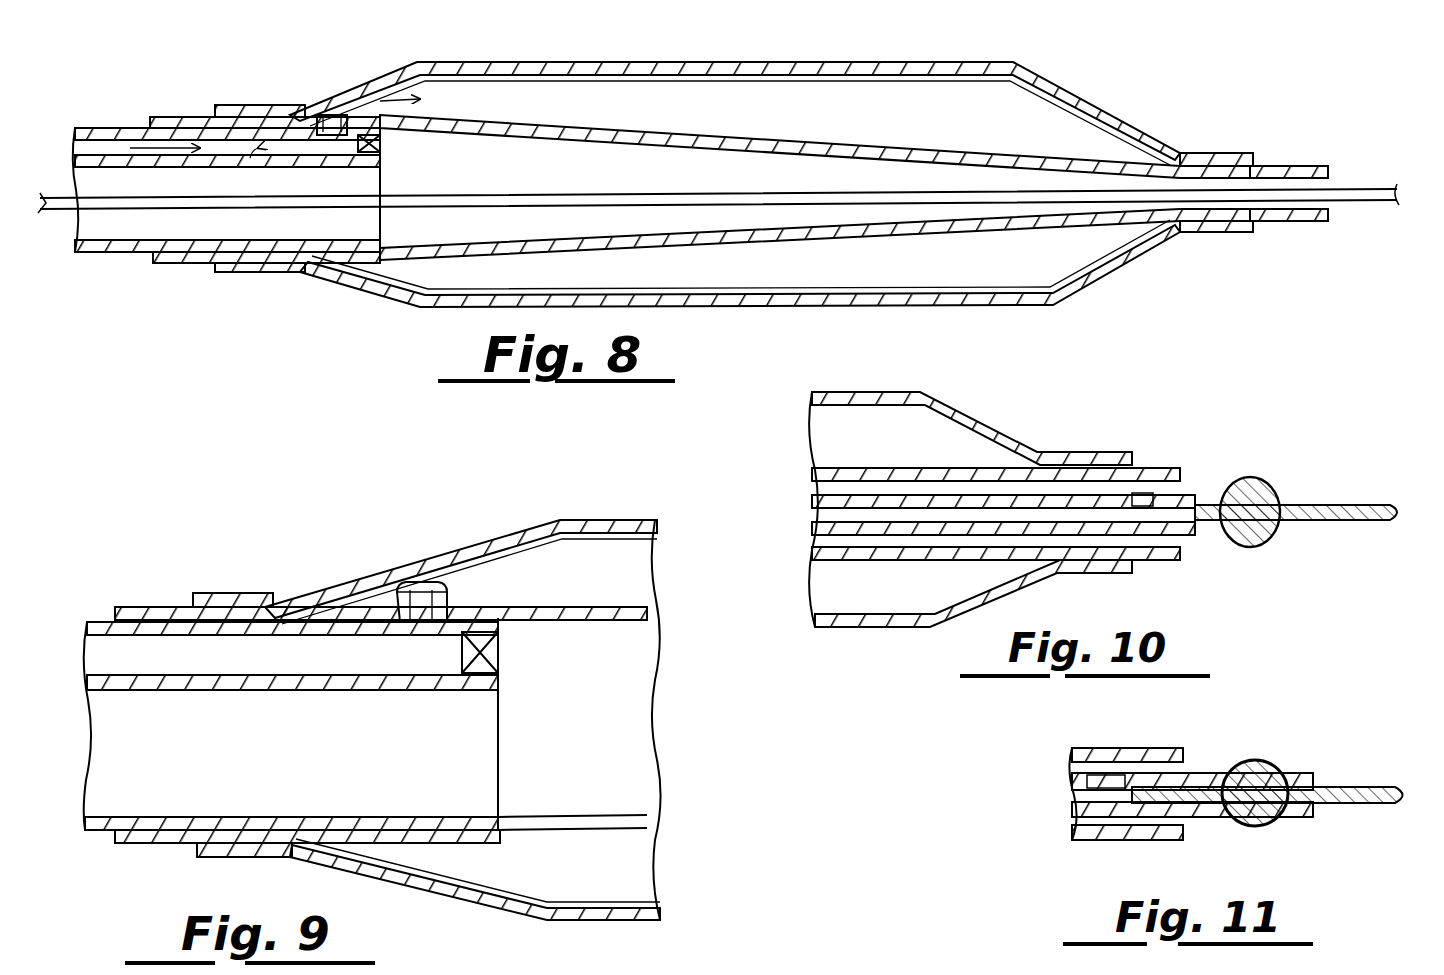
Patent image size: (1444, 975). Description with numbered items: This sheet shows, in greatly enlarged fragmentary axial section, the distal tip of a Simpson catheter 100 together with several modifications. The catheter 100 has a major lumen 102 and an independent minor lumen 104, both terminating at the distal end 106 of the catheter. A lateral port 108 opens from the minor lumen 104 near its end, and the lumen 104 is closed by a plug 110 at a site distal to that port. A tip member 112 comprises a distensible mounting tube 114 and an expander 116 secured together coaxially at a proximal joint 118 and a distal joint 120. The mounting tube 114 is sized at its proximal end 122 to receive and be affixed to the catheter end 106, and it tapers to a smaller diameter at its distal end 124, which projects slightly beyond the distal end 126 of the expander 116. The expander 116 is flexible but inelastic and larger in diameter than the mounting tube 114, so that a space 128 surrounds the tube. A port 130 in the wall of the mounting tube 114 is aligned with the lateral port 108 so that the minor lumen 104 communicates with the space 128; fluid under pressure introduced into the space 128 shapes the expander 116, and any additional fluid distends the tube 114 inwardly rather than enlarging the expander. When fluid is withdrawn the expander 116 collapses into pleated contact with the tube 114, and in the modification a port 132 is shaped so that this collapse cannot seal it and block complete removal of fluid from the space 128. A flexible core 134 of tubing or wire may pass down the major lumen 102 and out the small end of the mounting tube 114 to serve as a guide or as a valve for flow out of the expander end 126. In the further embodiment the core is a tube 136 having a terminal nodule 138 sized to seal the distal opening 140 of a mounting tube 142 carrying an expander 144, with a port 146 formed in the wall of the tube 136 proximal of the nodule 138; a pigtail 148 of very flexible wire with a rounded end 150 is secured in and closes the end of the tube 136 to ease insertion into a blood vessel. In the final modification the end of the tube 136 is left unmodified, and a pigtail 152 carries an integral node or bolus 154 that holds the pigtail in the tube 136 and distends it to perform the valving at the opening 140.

In FIG. 8, the Simpson catheter 100 is at (718, 201).
In FIG. 9, the Simpson catheter 100 is at (366, 703).
In FIG. 8, the major lumen 102 is at (222, 234).
In FIG. 9, the major lumen 102 is at (330, 762).
In FIG. 8, the minor lumen 104 is at (250, 145).
In FIG. 9, the minor lumen 104 is at (240, 666).
In FIG. 8, the distal end of the catheter 106 is at (383, 222).
In FIG. 9, the distal end of the catheter 106 is at (500, 775).
In FIG. 8, the lateral port 108 is at (310, 125).
In FIG. 9, the lateral port 108 is at (423, 627).
In FIG. 8, the plug 110 is at (382, 140).
In FIG. 9, the plug 110 is at (500, 650).
In FIG. 8, the tip member 112 is at (1087, 298).
In FIG. 8, the mounting tube 114 is at (755, 155).
In FIG. 9, the mounting tube 114 is at (563, 623).
In FIG. 8, the expander 116 is at (1068, 85).
In FIG. 9, the expander 116 is at (510, 533).
In FIG. 8, the proximal joint 118 is at (265, 272).
In FIG. 9, the proximal joint 118 is at (177, 843).
In FIG. 8, the distal joint 120 is at (1203, 232).
In FIG. 8, the proximal end of the mounting tube 122 is at (150, 117).
In FIG. 9, the proximal end of the mounting tube 122 is at (148, 607).
In FIG. 8, the distal end of the mounting tube 124 is at (1297, 221).
In FIG. 8, the distal end of the expander 126 is at (1255, 162).
In FIG. 8, the space 128 is at (920, 125).
In FIG. 9, the space 128 is at (643, 571).
In FIG. 8, the port 130 is at (323, 130).
In FIG. 9, the port 132 is at (447, 587).
In FIG. 8, the core 134 is at (563, 193).
In FIG. 10, the tube 136 is at (1010, 532).
In FIG. 11, the tube 136 is at (1195, 773).
In FIG. 10, the terminal nodule 138 is at (1263, 478).
In FIG. 10, the distal opening 140 is at (1182, 483).
In FIG. 11, the distal opening 140 is at (1108, 748).
In FIG. 10, the mounting tube 142 is at (868, 468).
In FIG. 10, the expander 144 is at (892, 392).
In FIG. 10, the port 146 is at (1145, 497).
In FIG. 10, the pigtail 148 is at (1317, 505).
In FIG. 10, the rounded end 150 is at (1402, 518).
In FIG. 11, the pigtail 152 is at (1362, 787).
In FIG. 11, the node or bolus 154 is at (1248, 777).